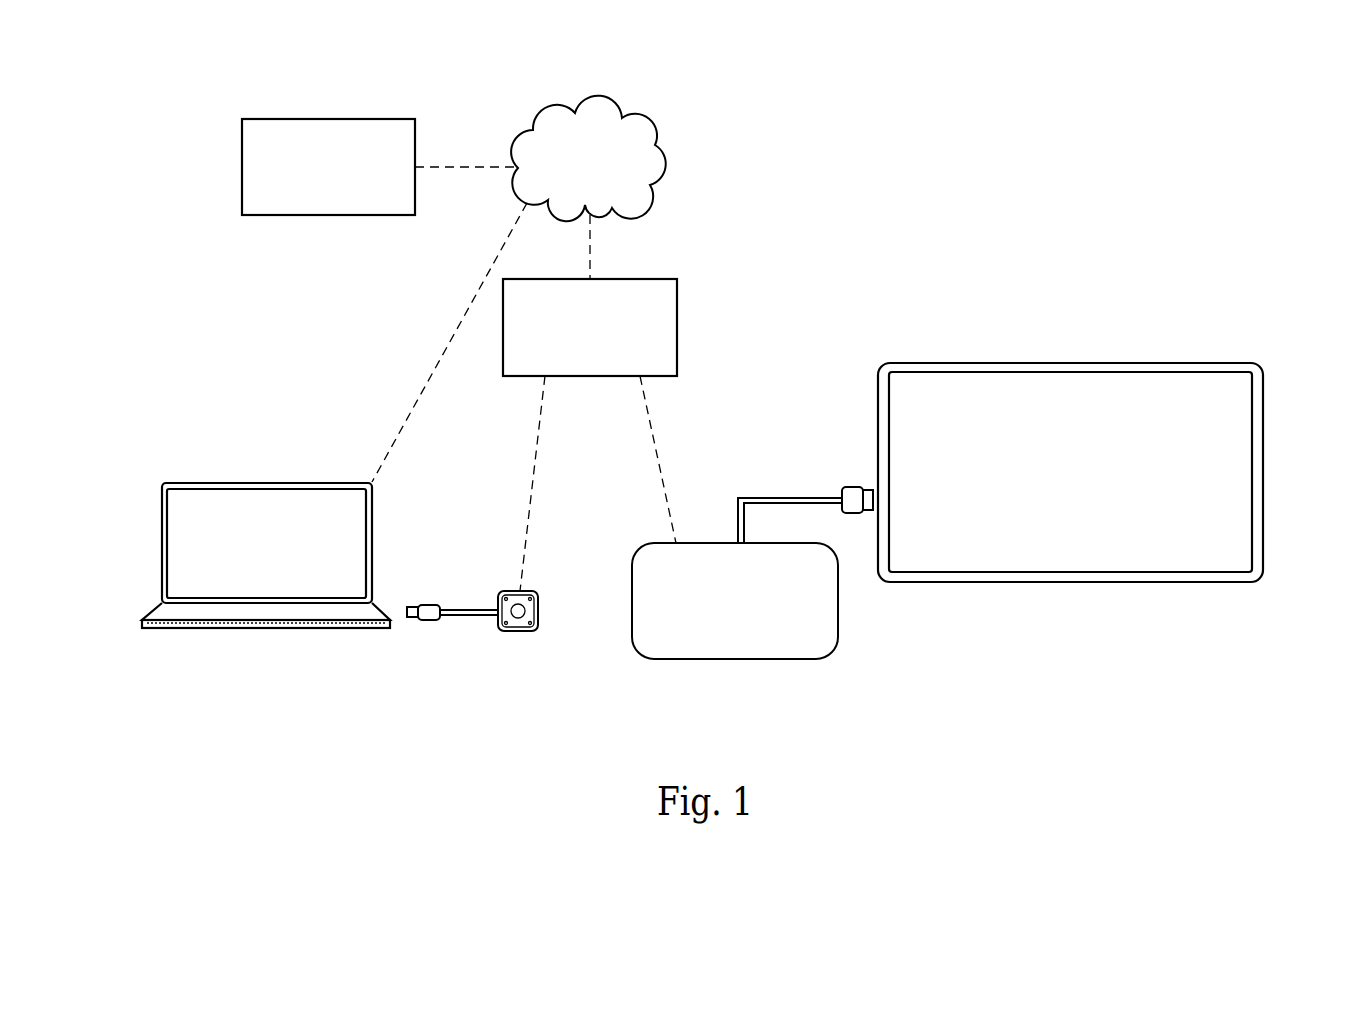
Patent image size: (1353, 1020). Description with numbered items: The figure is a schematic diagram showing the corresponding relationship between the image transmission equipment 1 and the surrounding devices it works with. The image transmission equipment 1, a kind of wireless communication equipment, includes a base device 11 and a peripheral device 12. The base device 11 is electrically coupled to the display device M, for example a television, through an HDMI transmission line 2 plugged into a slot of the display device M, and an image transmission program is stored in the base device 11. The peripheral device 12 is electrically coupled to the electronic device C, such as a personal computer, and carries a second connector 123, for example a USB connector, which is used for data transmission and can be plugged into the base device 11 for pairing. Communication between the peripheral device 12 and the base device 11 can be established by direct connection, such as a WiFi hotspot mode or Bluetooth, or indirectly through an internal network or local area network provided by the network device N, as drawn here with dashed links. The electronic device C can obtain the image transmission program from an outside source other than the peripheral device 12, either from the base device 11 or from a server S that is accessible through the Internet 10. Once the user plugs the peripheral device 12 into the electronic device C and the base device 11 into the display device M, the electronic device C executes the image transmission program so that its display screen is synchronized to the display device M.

The server S is at (268, 118).
The Internet 10 is at (612, 106).
The network device N is at (677, 327).
The electronic device C is at (255, 630).
The second connector 123 is at (430, 603).
The peripheral device 12 is at (517, 634).
The base device 11 is at (735, 632).
The image transmission equipment 1 is at (666, 655).
The HDMI transmission line 2 is at (858, 486).
The display device M is at (1008, 553).